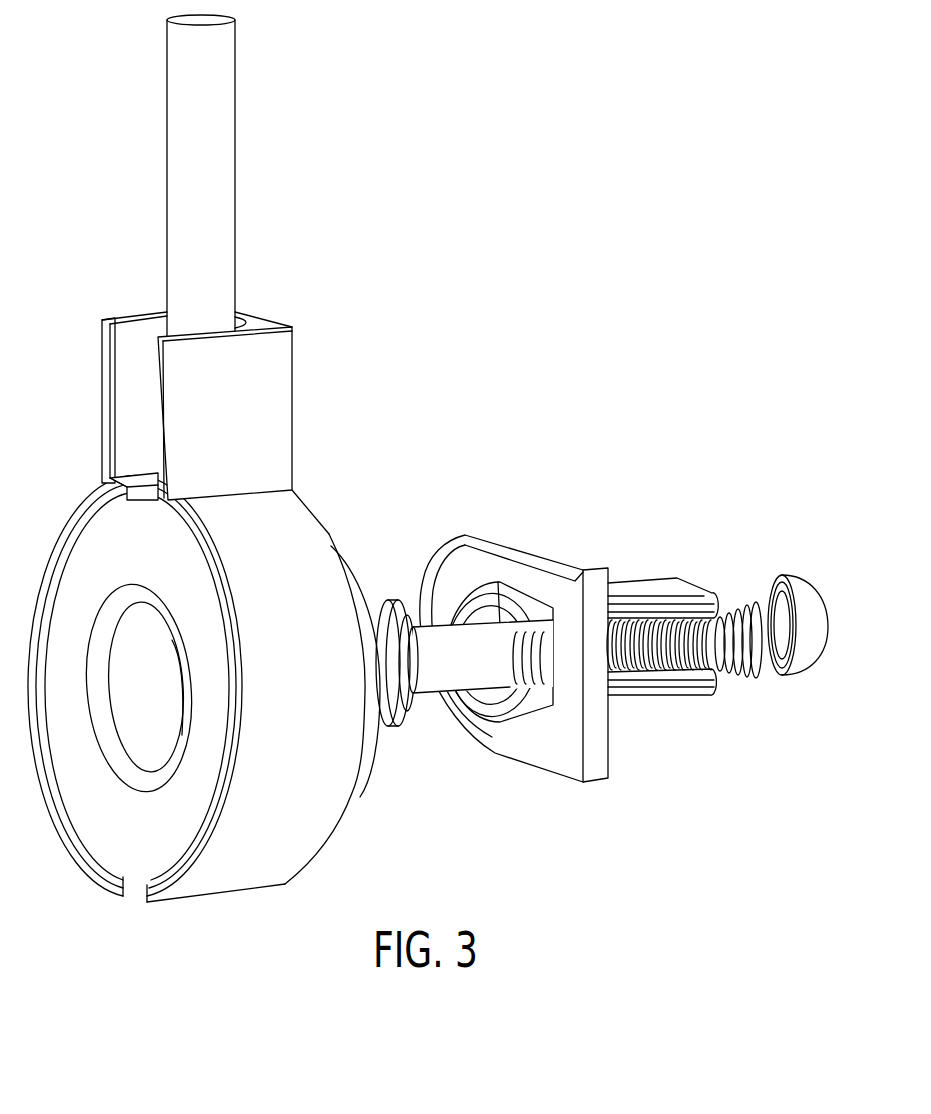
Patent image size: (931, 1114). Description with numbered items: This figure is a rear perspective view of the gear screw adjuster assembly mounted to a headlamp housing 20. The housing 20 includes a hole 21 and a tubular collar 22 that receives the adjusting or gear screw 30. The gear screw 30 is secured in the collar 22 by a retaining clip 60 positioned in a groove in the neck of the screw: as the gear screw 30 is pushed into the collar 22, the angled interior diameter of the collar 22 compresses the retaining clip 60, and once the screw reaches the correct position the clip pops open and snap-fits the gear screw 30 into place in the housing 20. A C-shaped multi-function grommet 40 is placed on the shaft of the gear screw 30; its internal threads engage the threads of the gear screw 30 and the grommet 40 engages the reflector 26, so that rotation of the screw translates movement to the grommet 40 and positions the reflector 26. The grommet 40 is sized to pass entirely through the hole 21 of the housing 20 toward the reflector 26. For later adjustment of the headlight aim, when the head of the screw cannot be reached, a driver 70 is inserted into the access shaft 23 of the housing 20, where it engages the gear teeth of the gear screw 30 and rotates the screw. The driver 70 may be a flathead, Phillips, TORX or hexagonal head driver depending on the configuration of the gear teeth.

The housing 20 is at (250, 865).
The hole 21 is at (140, 702).
The collar 22 is at (367, 766).
The access shaft 23 is at (128, 366).
The reflector 26 is at (538, 553).
The gear screw 30 is at (806, 592).
The grommet 40 is at (660, 592).
The retaining clip 60 is at (377, 607).
The driver 70 is at (181, 92).